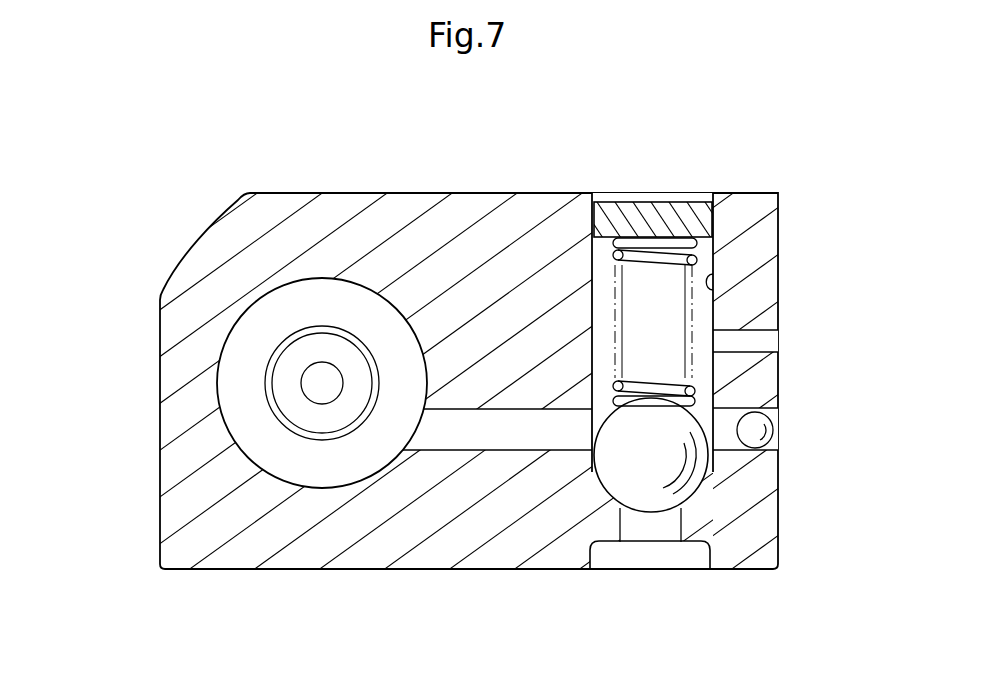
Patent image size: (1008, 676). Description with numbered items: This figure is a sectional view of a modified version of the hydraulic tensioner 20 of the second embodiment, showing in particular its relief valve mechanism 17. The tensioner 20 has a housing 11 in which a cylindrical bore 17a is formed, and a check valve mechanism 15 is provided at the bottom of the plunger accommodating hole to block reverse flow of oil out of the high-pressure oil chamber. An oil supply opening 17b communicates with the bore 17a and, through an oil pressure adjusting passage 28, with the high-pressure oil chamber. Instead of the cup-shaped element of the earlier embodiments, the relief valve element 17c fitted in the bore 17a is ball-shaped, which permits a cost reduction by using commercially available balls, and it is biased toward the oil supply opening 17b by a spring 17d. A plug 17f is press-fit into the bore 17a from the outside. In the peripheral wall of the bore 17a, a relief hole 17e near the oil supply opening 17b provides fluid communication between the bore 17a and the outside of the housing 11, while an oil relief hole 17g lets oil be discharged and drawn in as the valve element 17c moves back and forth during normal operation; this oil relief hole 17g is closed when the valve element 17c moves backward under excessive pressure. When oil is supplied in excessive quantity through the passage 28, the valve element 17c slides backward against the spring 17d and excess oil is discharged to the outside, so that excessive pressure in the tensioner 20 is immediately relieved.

The housing 11 is at (405, 212).
The check valve mechanism 15 is at (250, 383).
The relief valve mechanism 17 is at (650, 355).
The cylindrical bore 17a is at (716, 282).
The oil supply opening 17b is at (662, 562).
The relief valve element 17c is at (618, 478).
The spring 17d is at (713, 252).
The relief hole 17e is at (719, 450).
The plug 17f is at (654, 218).
The oil relief hole 17g is at (752, 350).
The tensioner 20 is at (731, 170).
The oil pressure adjusting passage 28 is at (444, 447).